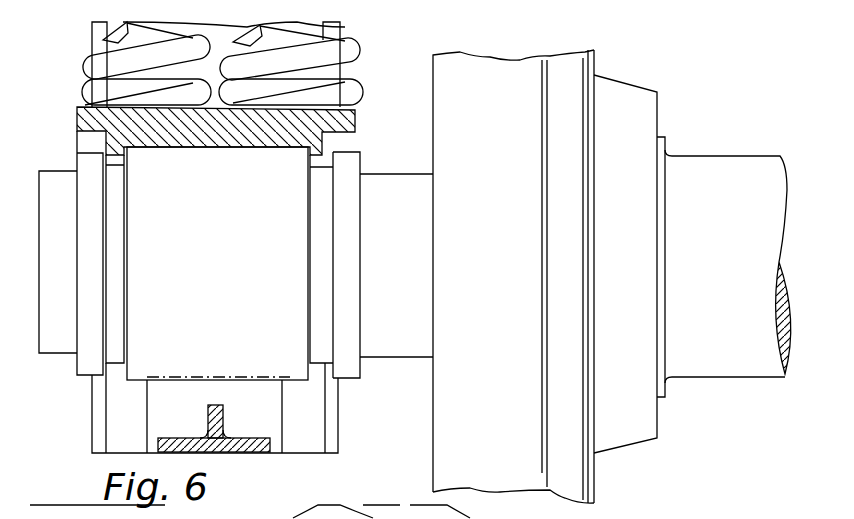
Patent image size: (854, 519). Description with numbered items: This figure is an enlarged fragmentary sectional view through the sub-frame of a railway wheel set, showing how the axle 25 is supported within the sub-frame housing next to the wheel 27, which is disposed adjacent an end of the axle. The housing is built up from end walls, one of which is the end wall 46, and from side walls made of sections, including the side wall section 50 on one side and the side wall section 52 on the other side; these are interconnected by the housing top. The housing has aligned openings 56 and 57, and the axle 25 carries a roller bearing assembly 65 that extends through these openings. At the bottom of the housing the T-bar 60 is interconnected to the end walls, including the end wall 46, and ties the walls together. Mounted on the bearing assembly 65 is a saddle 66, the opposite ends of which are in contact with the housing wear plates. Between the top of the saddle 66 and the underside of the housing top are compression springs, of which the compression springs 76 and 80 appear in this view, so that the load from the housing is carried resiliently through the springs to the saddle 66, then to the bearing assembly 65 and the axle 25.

The axle 25 is at (735, 275).
The wheel 27 is at (514, 281).
The end wall 46 is at (127, 425).
The side wall section 50 is at (102, 400).
The side wall section 52 is at (332, 405).
The opening 56 is at (100, 92).
The opening 57 is at (337, 72).
The T-bar 60 is at (262, 452).
The bearing assembly 65 is at (228, 259).
The saddle 66 is at (128, 118).
The compression spring 76 is at (333, 50).
The compression spring 80 is at (112, 64).